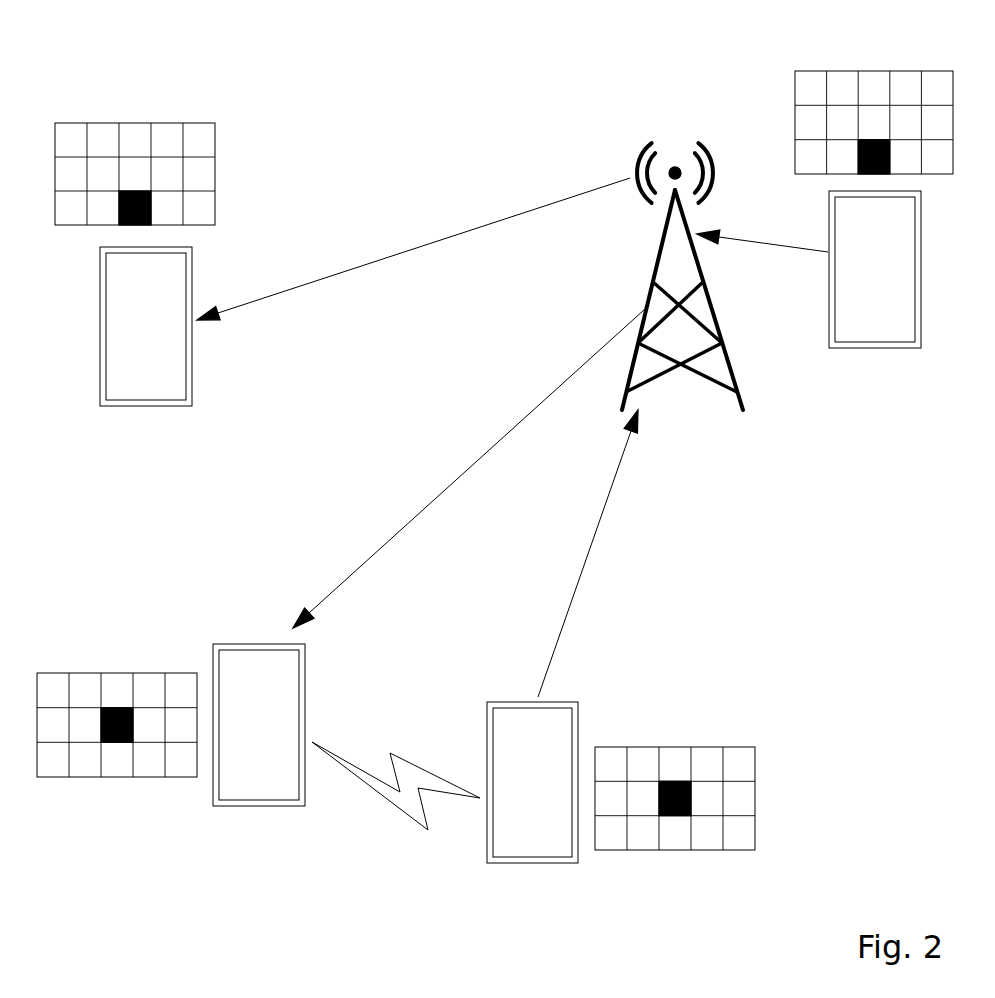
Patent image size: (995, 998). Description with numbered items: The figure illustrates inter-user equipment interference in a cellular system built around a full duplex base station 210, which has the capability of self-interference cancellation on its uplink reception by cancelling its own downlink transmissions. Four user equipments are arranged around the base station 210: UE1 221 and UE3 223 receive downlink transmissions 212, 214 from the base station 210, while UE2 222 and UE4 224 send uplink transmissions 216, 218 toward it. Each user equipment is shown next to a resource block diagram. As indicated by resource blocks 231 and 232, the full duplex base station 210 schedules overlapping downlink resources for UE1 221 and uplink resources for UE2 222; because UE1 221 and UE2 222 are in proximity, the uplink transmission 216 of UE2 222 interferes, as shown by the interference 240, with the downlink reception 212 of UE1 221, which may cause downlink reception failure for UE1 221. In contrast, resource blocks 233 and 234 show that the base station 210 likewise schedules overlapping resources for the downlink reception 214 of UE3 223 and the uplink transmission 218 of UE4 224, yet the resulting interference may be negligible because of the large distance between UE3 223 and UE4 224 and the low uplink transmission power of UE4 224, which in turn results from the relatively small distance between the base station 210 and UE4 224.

The base station 210 is at (662, 247).
The DL transmission 212 is at (390, 537).
The DL transmission 214 is at (323, 282).
The UL transmission 216 is at (615, 496).
The UL transmission 218 is at (752, 233).
The UE1 221 is at (290, 660).
The UE2 222 is at (557, 705).
The UE3 223 is at (165, 355).
The UE4 224 is at (862, 338).
The resource block 231 is at (132, 685).
The resource block 232 is at (750, 753).
The resource block 233 is at (170, 133).
The resource block 234 is at (881, 71).
The interference 240 is at (420, 819).